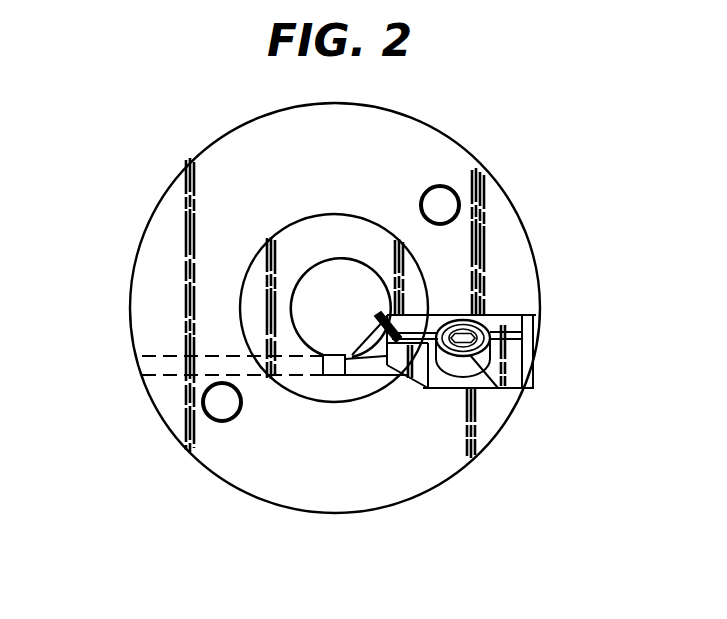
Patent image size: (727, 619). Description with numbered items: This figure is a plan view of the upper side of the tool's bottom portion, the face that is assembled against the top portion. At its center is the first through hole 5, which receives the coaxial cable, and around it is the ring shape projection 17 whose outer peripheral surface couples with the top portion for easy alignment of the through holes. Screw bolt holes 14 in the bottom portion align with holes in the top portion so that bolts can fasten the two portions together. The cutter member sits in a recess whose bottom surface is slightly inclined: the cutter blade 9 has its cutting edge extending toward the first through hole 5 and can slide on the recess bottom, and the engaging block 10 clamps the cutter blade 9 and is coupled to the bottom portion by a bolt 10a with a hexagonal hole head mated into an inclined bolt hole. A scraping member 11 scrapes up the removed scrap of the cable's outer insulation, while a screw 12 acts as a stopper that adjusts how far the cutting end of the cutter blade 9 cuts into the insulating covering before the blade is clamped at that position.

The first through hole 5 is at (317, 274).
The ring shape projection 17 is at (257, 279).
The screw bolt holes 14 is at (443, 193).
The scraping member 11 is at (400, 314).
The engaging block 10 is at (517, 314).
The bolt 10a is at (487, 388).
The cutter blade 9 is at (337, 381).
The screw 12 is at (339, 376).